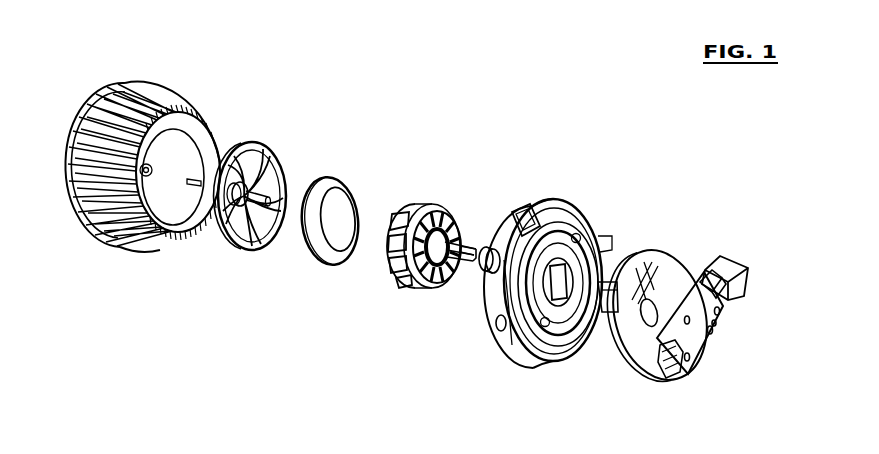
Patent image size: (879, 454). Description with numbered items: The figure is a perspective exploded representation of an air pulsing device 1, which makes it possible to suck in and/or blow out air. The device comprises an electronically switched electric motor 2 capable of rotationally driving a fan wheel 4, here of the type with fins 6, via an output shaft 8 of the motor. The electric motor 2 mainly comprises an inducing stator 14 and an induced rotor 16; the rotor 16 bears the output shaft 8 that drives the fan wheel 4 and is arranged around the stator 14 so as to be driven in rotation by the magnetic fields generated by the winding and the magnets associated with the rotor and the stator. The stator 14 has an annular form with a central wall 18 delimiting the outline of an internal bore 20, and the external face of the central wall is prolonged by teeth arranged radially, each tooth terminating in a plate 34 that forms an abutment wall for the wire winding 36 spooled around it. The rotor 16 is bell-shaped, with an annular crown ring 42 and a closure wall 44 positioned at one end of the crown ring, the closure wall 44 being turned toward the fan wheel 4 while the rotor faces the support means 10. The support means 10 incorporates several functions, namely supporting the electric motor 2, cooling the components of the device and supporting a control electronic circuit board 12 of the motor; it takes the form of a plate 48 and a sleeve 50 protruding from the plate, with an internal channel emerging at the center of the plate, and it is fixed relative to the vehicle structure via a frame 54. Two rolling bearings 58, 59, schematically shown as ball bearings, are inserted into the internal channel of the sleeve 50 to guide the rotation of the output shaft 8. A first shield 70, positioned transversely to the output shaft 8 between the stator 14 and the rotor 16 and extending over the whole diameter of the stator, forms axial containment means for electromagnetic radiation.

The air pulsing device 1 is at (742, 186).
The electronically switched electric motor 2 is at (292, 298).
The fan wheel 4 is at (131, 118).
The fins 6 is at (113, 244).
The output shaft 8 is at (267, 184).
The support means 10 is at (672, 247).
The control electronic circuit board 12 is at (698, 366).
The stator 14 is at (441, 195).
The rotor 16 is at (213, 240).
The central wall 18 is at (462, 222).
The internal bore 20 is at (470, 250).
The plate 34 is at (418, 210).
The wire winding 36 is at (395, 280).
The annular crown ring 42 is at (233, 152).
The closure wall 44 is at (247, 252).
The plate 48 is at (684, 286).
The sleeve 50 is at (608, 288).
The frame 54 is at (582, 201).
The rolling bearing 58 is at (486, 276).
The rolling bearing 59 is at (262, 190).
The first shield 70 is at (328, 272).